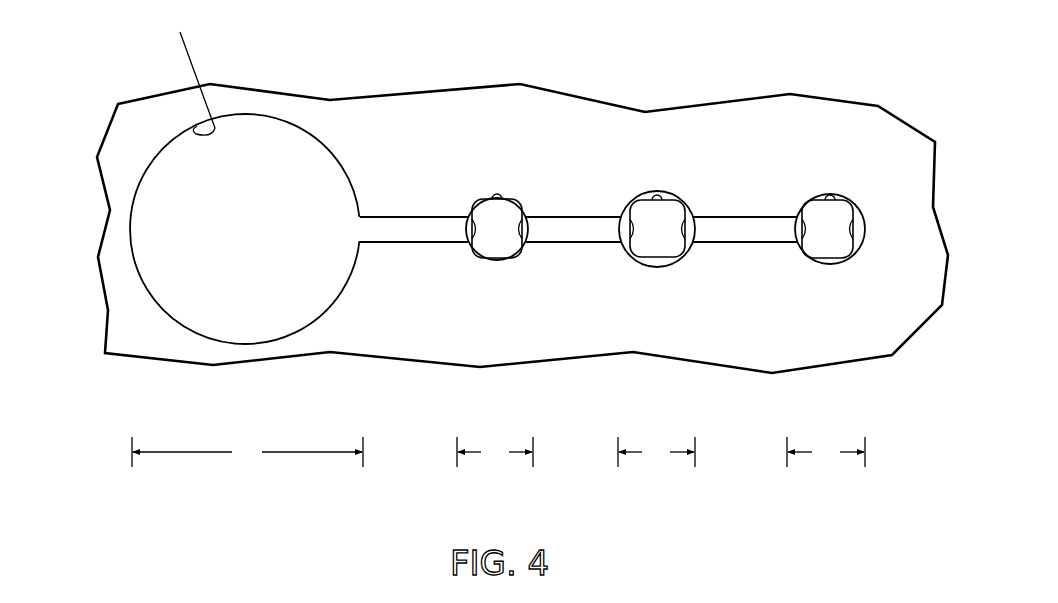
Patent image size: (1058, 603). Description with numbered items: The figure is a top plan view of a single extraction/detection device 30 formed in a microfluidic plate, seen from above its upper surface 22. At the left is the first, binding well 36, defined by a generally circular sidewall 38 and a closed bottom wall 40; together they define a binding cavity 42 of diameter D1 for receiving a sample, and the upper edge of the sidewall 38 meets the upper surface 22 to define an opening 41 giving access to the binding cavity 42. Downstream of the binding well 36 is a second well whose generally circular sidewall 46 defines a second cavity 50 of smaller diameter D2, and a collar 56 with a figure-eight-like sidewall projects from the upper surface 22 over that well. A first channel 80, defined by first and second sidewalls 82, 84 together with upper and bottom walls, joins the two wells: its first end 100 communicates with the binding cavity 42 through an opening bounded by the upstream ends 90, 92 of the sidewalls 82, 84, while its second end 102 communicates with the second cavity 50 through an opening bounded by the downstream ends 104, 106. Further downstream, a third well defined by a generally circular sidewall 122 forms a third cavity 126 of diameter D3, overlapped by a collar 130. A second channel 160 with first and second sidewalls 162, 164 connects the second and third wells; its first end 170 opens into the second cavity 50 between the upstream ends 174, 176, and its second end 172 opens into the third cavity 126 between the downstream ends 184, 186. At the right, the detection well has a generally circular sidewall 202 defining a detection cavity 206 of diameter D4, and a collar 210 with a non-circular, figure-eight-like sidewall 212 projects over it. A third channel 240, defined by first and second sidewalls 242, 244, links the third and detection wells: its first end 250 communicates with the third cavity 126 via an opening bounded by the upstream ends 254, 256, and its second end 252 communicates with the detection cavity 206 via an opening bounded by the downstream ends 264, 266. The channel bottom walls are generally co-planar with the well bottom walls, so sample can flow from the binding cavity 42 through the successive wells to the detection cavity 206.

The upper surface 22 is at (415, 137).
The extraction/detection device 30 is at (504, 318).
The binding well 36 is at (142, 155).
The sidewall 38 is at (190, 70).
The bottom wall 40 is at (229, 240).
The opening 41 is at (269, 112).
The binding cavity 42 is at (281, 307).
The first channel 80 is at (435, 247).
The first sidewall 82 is at (395, 215).
The second sidewall 84 is at (377, 245).
The upstream end 90 is at (357, 223).
The upstream end 92 is at (356, 241).
The first end 100 is at (362, 205).
The second end 102 is at (455, 214).
The downstream end 104 is at (457, 232).
The downstream end 106 is at (453, 246).
The sidewall 46 is at (499, 193).
The second cavity 50 is at (481, 240).
The collar 56 is at (515, 200).
The upstream end 174 is at (508, 262).
The upstream end 176 is at (527, 246).
The second channel 160 is at (588, 248).
The first sidewall 162 is at (568, 216).
The second sidewall 164 is at (571, 243).
The first end 170 is at (536, 211).
The second end 172 is at (613, 211).
The downstream end 186 is at (620, 250).
The sidewall 122 is at (657, 194).
The third cavity 126 is at (637, 240).
The collar 130 is at (631, 202).
The downstream end 184 is at (642, 251).
The upstream end 254 is at (699, 211).
The upstream end 256 is at (687, 249).
The first end 250 is at (714, 214).
The third channel 240 is at (742, 247).
The first sidewall 242 is at (735, 215).
The second sidewall 244 is at (758, 246).
The second end 252 is at (788, 212).
The sidewall 202 is at (836, 194).
The detection cavity 206 is at (810, 241).
The collar 210 is at (847, 263).
The sidewall 212 is at (854, 207).
The downstream end 264 is at (803, 222).
The downstream end 266 is at (795, 244).